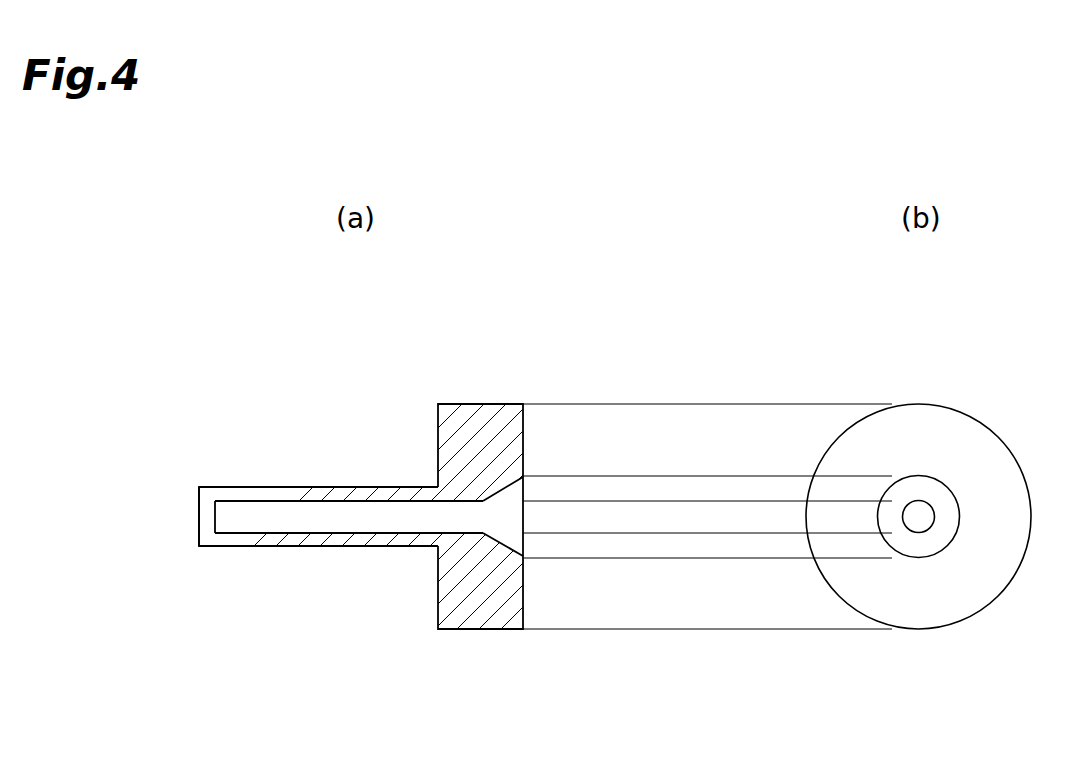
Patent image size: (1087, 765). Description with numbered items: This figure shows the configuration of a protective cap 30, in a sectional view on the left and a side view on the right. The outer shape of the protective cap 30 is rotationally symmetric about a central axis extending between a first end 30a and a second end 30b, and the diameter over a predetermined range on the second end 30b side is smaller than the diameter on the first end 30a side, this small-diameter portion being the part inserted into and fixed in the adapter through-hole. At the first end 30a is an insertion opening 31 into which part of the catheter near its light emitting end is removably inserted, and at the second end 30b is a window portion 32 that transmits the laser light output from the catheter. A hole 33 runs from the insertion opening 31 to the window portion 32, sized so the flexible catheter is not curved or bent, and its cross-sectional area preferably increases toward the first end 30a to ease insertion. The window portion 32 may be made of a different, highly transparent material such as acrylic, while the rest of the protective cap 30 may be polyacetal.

The protective cap 30 is at (586, 500).
The first end 30a is at (523, 630).
The second end 30b is at (197, 548).
The insertion opening 31 is at (525, 516).
The window portion 32 is at (198, 517).
The hole 33 is at (327, 522).